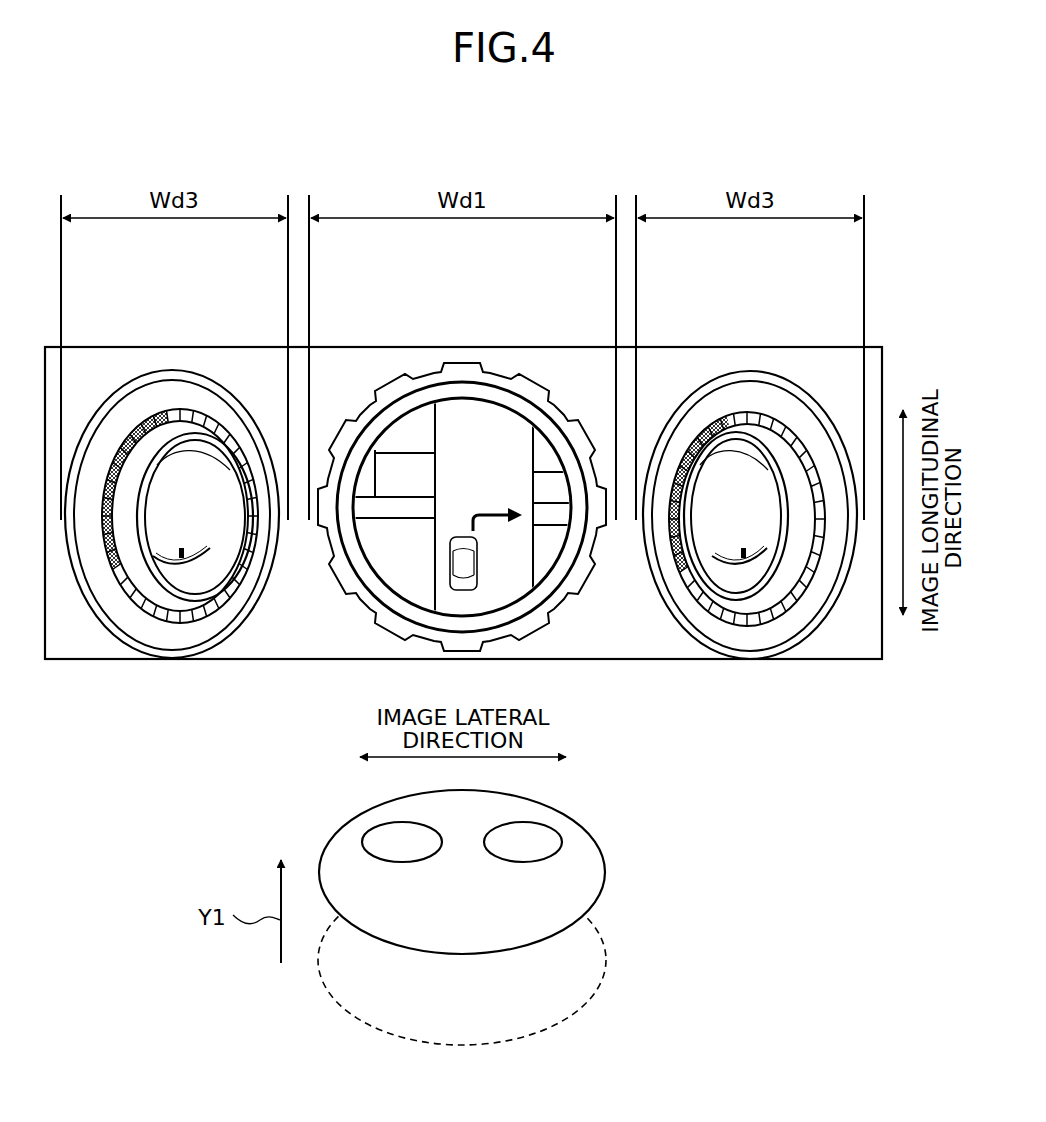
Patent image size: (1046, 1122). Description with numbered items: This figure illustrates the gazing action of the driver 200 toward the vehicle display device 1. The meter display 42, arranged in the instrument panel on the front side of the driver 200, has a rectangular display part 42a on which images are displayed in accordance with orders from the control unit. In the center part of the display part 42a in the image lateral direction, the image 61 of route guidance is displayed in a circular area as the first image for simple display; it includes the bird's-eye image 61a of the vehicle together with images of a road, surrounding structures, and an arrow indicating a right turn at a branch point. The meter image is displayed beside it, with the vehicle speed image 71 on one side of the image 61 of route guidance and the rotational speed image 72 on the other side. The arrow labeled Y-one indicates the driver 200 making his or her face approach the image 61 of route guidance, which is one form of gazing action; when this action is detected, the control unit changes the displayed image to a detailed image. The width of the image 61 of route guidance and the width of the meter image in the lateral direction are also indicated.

The vehicle display device 1 is at (347, 183).
The vehicle speed image 71 is at (236, 375).
The rotational speed image 72 is at (757, 360).
The display part 42a is at (358, 370).
The meter display 42 is at (456, 343).
The image of route guidance 61 is at (606, 700).
The bird's-eye image of the vehicle 61a is at (447, 574).
The driver 200 is at (606, 868).